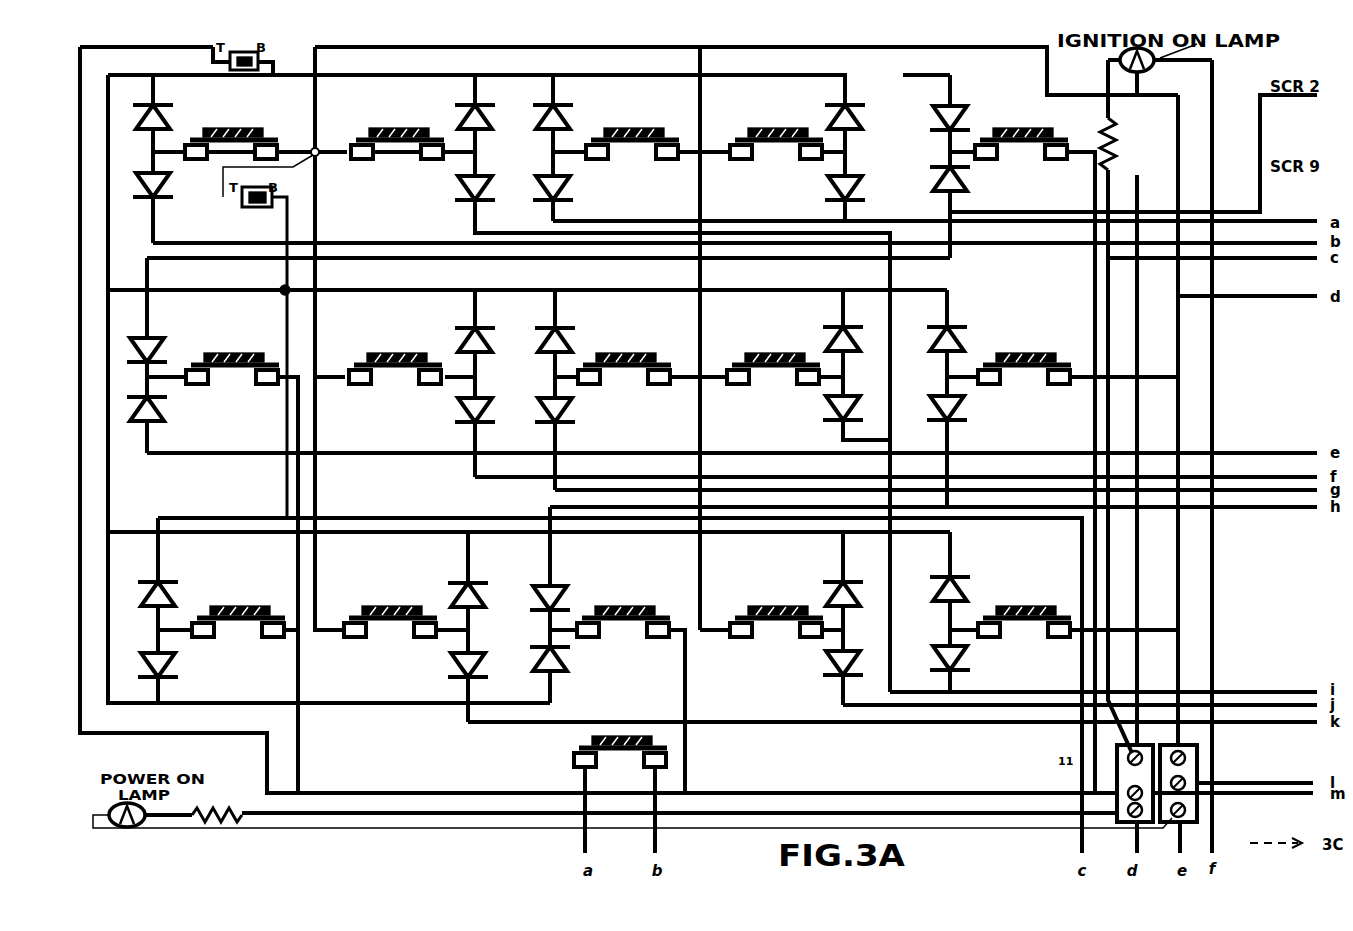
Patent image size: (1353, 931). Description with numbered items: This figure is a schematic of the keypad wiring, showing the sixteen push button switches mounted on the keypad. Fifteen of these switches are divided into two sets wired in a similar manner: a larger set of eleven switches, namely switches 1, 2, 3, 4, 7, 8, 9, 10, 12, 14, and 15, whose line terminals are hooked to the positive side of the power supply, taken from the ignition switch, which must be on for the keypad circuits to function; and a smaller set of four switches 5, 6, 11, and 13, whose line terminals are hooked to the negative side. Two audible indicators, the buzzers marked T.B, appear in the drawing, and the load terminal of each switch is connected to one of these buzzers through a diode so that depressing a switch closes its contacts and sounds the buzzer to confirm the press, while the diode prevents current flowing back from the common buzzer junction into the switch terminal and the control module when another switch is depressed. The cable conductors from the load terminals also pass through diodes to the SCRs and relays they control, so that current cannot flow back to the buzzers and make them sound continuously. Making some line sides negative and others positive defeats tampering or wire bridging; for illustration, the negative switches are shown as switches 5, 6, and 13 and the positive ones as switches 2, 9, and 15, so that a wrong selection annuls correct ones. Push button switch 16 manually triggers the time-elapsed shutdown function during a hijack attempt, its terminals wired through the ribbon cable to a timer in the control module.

The push button switch 1 is at (231, 145).
The push button switch 2 is at (397, 145).
The push button switch 3 is at (632, 145).
The push button switch 4 is at (776, 145).
The push button switch 5 is at (1021, 145).
The push button switch 6 is at (232, 370).
The push button switch 7 is at (395, 370).
The push button switch 8 is at (624, 370).
The push button switch 9 is at (773, 370).
The push button switch 10 is at (1024, 370).
The push button switch 11 is at (238, 623).
The push button switch 12 is at (390, 623).
The push button switch 13 is at (623, 623).
The push button switch 14 is at (776, 623).
The push button switch 15 is at (1024, 623).
The push button switch 16 is at (620, 753).